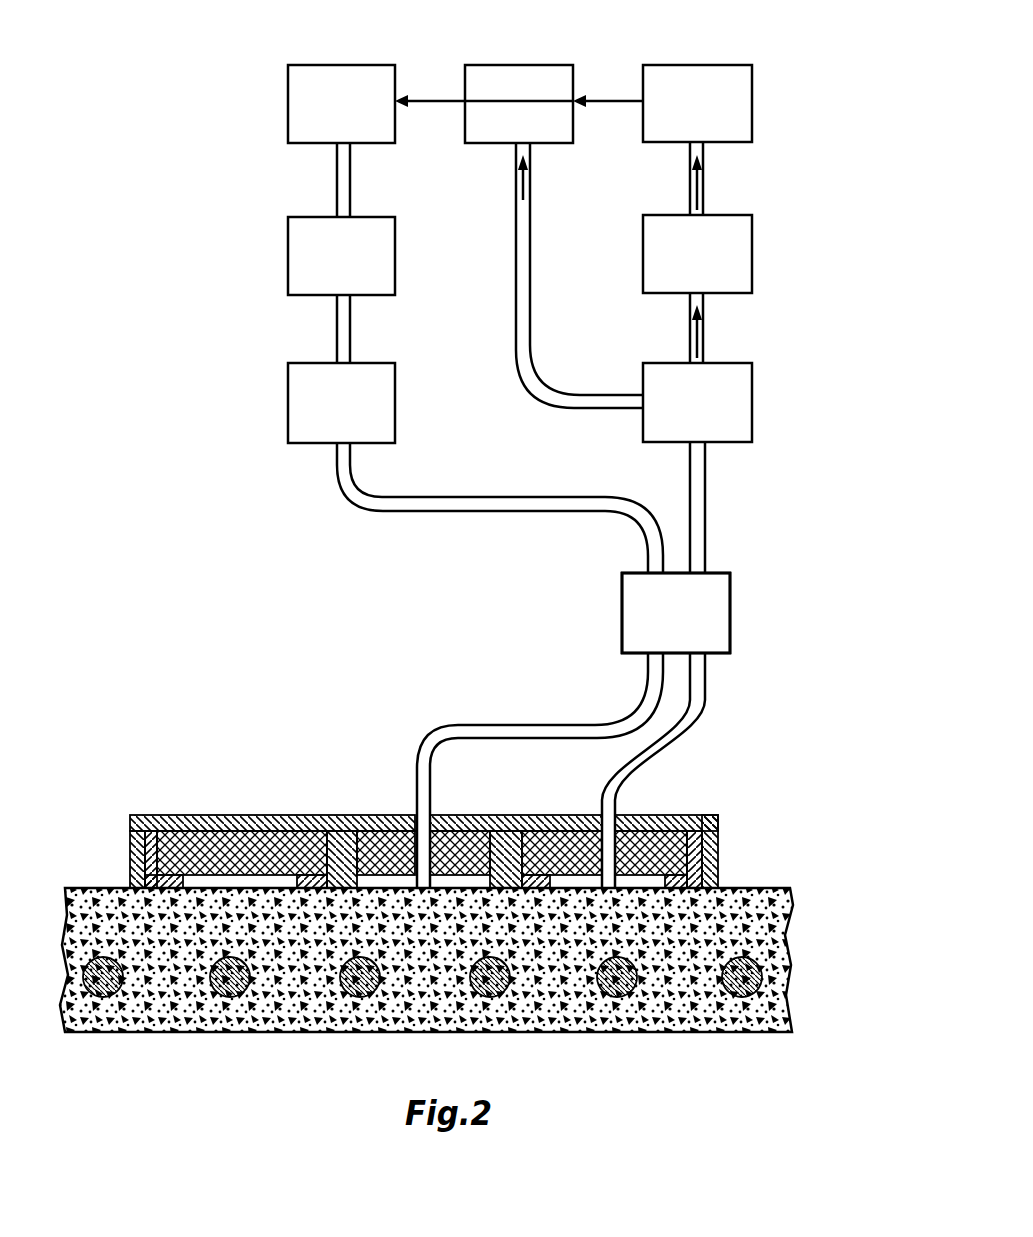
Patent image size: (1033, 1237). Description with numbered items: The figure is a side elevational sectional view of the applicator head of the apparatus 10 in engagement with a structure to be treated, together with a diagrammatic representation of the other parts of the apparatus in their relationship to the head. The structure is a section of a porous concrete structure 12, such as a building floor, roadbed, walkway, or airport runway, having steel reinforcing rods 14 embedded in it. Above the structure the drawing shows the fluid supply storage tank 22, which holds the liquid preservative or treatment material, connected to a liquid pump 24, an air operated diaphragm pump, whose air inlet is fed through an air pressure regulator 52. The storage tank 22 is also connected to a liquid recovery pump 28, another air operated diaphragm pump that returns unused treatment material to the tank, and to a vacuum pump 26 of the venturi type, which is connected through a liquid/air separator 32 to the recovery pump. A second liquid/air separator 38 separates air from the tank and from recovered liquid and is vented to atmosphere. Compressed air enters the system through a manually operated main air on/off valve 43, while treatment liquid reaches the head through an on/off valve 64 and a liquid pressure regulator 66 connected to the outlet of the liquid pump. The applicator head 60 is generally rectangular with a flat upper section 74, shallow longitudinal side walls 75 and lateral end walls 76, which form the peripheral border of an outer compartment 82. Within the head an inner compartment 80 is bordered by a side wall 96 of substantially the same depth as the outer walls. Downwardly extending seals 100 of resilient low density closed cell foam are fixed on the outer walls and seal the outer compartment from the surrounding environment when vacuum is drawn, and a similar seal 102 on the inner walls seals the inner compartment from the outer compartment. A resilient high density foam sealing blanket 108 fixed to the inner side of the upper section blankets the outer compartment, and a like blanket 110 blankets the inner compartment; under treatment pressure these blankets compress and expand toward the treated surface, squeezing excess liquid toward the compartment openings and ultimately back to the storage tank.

The apparatus 10 is at (220, 150).
The porous concrete structure 12 is at (600, 1008).
The steel reinforcing rods 14 is at (100, 1000).
The fluid supply storage tank 22 is at (302, 75).
The liquid pump 24 is at (290, 240).
The vacuum pump 26 is at (755, 240).
The liquid recovery pump 28 is at (562, 74).
The liquid/air separator 32 is at (742, 74).
The liquid/air separator 38 is at (755, 388).
The main air on/off valve 43 is at (632, 618).
The air pressure regulator 52 is at (290, 388).
The applicator head 60 is at (237, 822).
The on/off valve 64 is at (676, 613).
The liquid pressure regulator 66 is at (676, 613).
The upper section 74 is at (426, 813).
The longitudinal side walls 75 is at (132, 837).
The lateral end walls 76 is at (722, 827).
The inner compartment 80 is at (412, 815).
The outer compartment 82 is at (203, 858).
The side wall 96 is at (345, 830).
The seals 100 is at (132, 878).
The seal 102 is at (328, 820).
The sealing blanket 108 is at (277, 822).
The blanket 110 is at (455, 832).